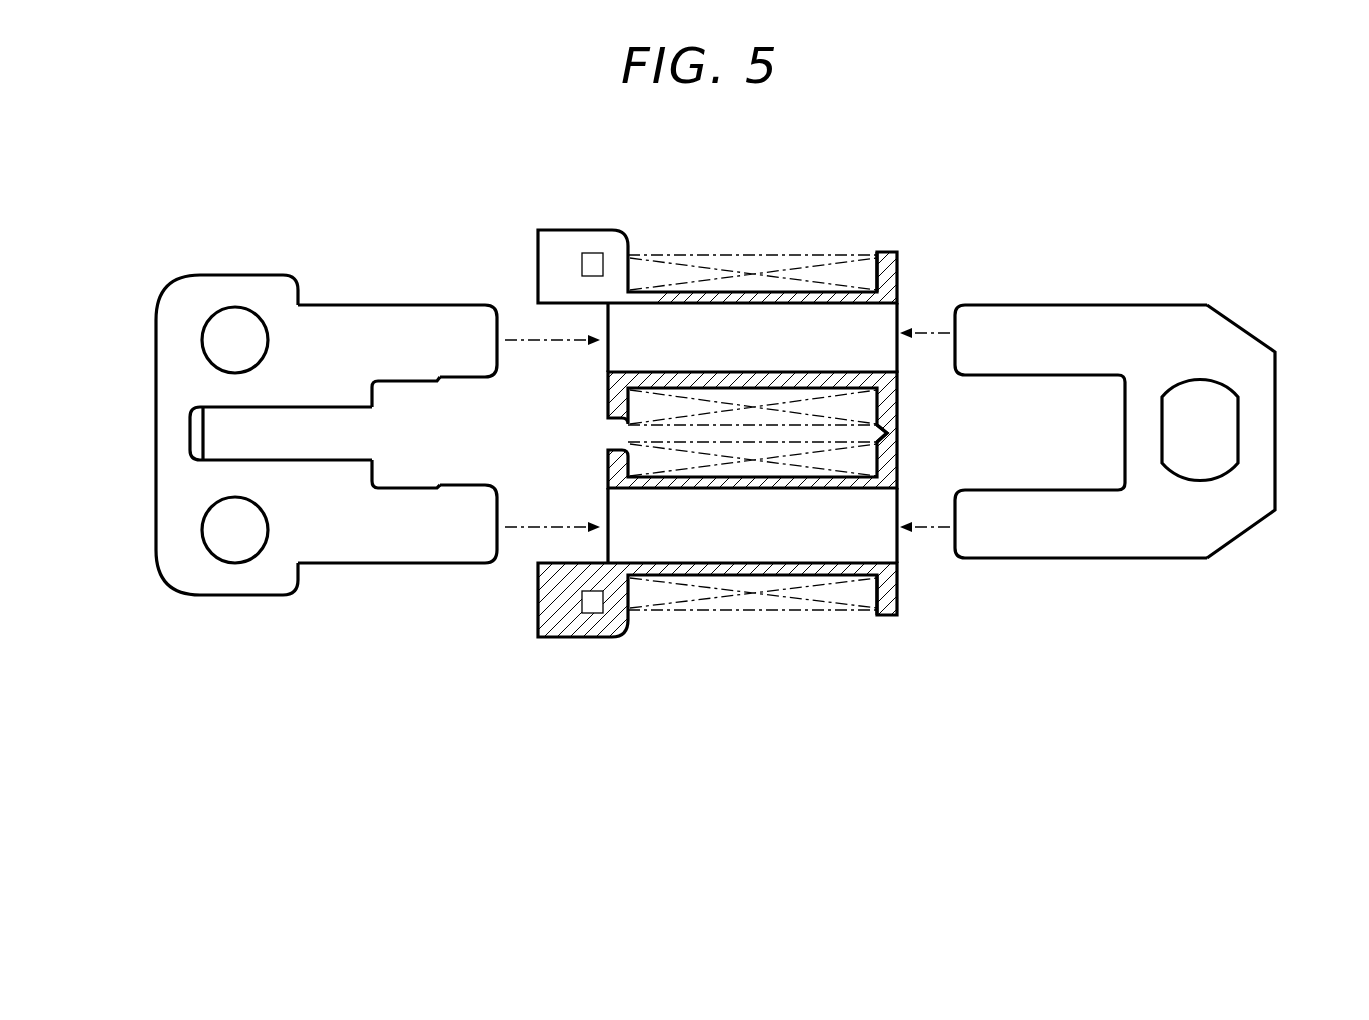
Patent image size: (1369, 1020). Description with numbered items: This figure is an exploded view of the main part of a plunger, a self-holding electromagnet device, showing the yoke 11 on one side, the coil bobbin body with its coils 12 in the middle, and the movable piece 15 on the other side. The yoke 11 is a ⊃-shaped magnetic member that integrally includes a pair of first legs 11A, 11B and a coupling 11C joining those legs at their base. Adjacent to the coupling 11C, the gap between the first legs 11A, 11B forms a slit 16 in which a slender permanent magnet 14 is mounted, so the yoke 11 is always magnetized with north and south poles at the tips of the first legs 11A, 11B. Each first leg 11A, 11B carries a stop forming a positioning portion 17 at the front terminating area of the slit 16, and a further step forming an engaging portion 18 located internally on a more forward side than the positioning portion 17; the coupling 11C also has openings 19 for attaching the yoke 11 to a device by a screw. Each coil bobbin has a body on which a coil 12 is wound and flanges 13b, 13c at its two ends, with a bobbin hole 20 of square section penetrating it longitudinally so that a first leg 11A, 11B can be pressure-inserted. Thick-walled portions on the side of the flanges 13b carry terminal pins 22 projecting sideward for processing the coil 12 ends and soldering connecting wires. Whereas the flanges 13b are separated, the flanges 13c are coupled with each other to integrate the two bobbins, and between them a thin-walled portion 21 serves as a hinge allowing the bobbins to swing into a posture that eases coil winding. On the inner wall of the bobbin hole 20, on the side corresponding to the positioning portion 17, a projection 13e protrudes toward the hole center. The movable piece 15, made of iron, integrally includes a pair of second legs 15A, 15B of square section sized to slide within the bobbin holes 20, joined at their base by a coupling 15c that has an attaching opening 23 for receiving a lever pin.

The yoke 11 is at (274, 455).
The first leg 11A is at (388, 322).
The first leg 11B is at (407, 548).
The coupling 11C is at (172, 423).
The coil 12 is at (738, 260).
The flange 13b is at (612, 465).
The flange 13c is at (886, 255).
The projection 13e is at (617, 345).
The permanent magnet 14 is at (303, 448).
The movable piece 15 is at (1159, 436).
The second leg 15A is at (1005, 325).
The second leg 15B is at (1032, 540).
The coupling 15c is at (1262, 438).
The slit 16 is at (208, 458).
The positioning portion 17 is at (370, 378).
The engaging portion 18 is at (402, 390).
The mounting hole 19 is at (220, 322).
The bobbin hole 20 is at (798, 310).
The thin-walled portion 21 is at (893, 433).
The terminal pin 22 is at (592, 262).
The attaching opening 23 is at (1205, 466).